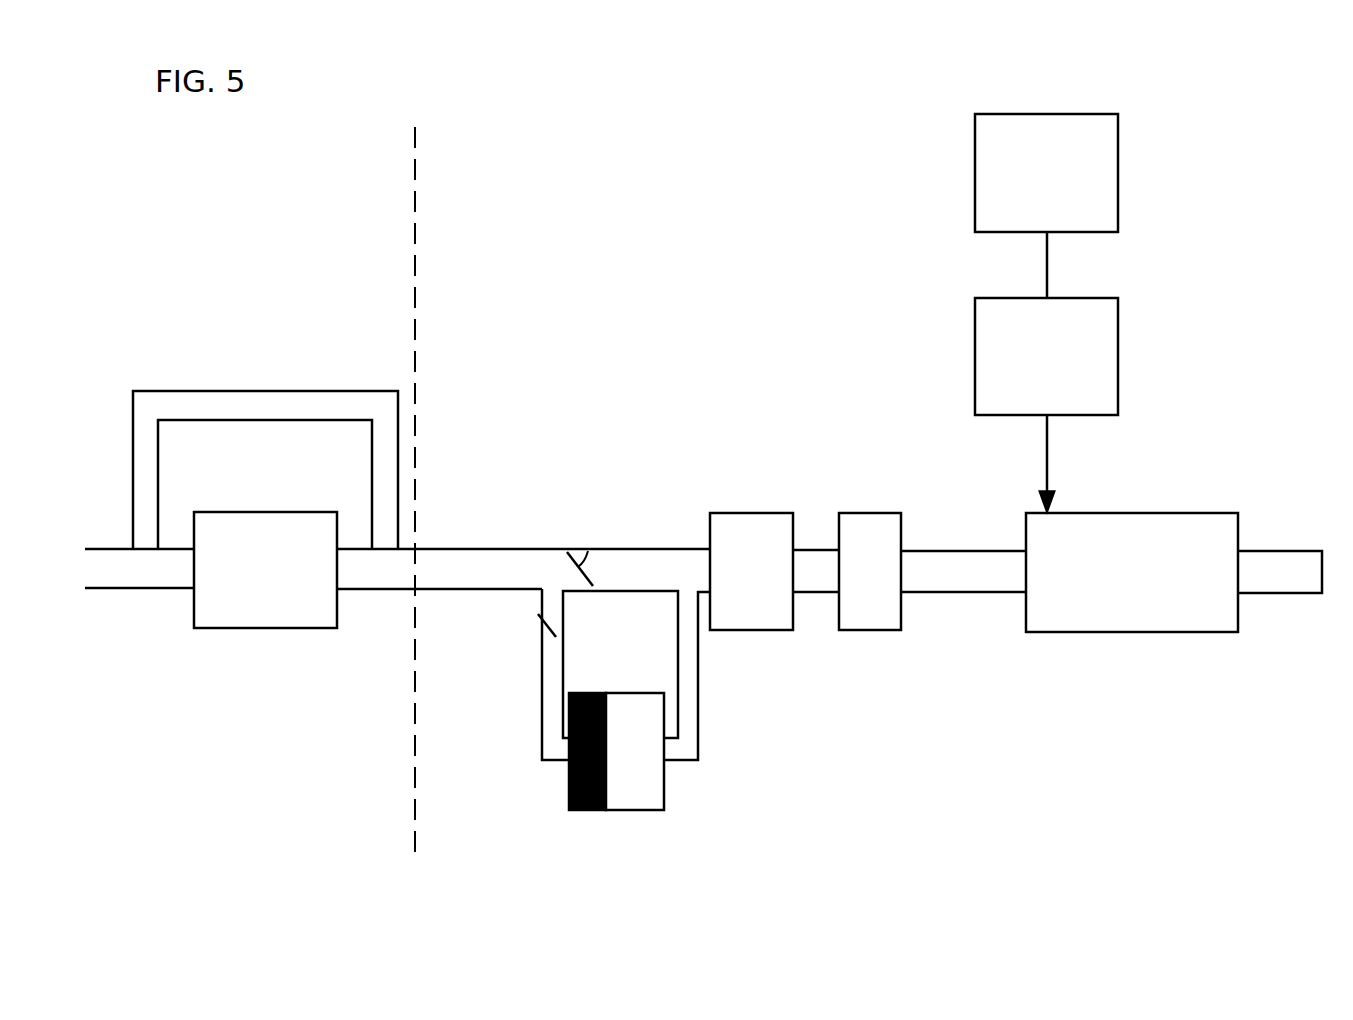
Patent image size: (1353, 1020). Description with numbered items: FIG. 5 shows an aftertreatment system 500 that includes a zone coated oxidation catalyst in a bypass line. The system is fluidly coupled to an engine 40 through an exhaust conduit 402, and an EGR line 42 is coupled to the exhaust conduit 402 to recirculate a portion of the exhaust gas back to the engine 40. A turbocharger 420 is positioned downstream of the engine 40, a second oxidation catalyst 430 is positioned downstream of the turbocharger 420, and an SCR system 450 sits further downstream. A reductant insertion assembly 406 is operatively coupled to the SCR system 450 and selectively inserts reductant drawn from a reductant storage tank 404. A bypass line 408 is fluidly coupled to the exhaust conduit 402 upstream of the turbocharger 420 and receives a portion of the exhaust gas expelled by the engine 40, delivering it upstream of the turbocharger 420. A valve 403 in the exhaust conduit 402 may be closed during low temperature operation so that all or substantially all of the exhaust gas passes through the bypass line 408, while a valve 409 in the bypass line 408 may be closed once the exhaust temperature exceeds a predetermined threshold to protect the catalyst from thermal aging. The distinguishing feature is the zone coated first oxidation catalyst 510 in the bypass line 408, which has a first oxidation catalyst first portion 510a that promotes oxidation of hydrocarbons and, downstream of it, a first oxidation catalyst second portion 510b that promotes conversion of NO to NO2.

The aftertreatment system 500 is at (1194, 143).
The EGR line 42 is at (277, 391).
The engine 40 is at (253, 593).
The exhaust conduit 402 is at (472, 593).
The valve 403 is at (587, 553).
The bypass line 408 is at (542, 707).
The valve 409 is at (545, 625).
The zone coated first oxidation catalyst 510 is at (722, 812).
The first oxidation catalyst first portion 510a is at (569, 797).
The first oxidation catalyst second portion 510b is at (653, 792).
The turbocharger 420 is at (753, 512).
The second oxidation catalyst 430 is at (852, 512).
The SCR system 450 is at (1113, 597).
The reductant storage tank 404 is at (1027, 222).
The reductant insertion assembly 406 is at (1027, 407).